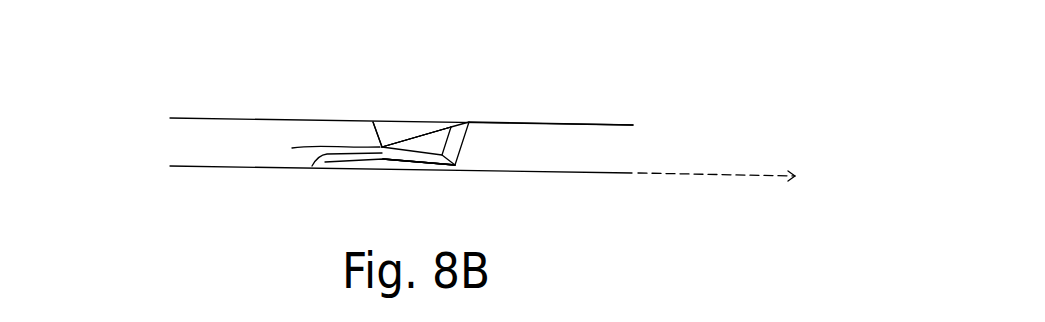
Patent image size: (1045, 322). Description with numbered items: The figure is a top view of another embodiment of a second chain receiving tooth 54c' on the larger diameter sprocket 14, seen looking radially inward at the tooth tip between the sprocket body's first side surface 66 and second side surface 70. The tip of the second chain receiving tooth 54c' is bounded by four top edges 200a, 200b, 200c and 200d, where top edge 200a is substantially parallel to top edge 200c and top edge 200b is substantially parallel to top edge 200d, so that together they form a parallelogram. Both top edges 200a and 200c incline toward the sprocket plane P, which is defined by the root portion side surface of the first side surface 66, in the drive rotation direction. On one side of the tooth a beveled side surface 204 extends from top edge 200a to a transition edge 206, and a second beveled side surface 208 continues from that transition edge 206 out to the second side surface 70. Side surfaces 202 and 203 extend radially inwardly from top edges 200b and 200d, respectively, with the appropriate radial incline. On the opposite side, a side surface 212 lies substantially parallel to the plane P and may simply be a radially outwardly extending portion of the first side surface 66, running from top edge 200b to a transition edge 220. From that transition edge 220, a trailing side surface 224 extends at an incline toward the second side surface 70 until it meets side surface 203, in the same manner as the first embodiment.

The second chain receiving tooth 54c' is at (422, 124).
The second side surface 70 is at (190, 118).
The first side surface 66 is at (198, 166).
The larger diameter sprocket 14 is at (183, 142).
The beveled side surface 208 is at (398, 130).
The side surface 203 is at (355, 138).
The transition edge 206 is at (437, 132).
The beveled side surface 204 is at (443, 140).
The top edge 200a is at (468, 143).
The side surface 202 is at (517, 125).
The top edge 200b is at (455, 165).
The top edge 200c is at (402, 168).
The top edge 200d is at (306, 147).
The trailing side surface 224 is at (382, 168).
The transition edge 220 is at (423, 167).
The side surface 212 is at (427, 166).
The sprocket plane P is at (707, 173).